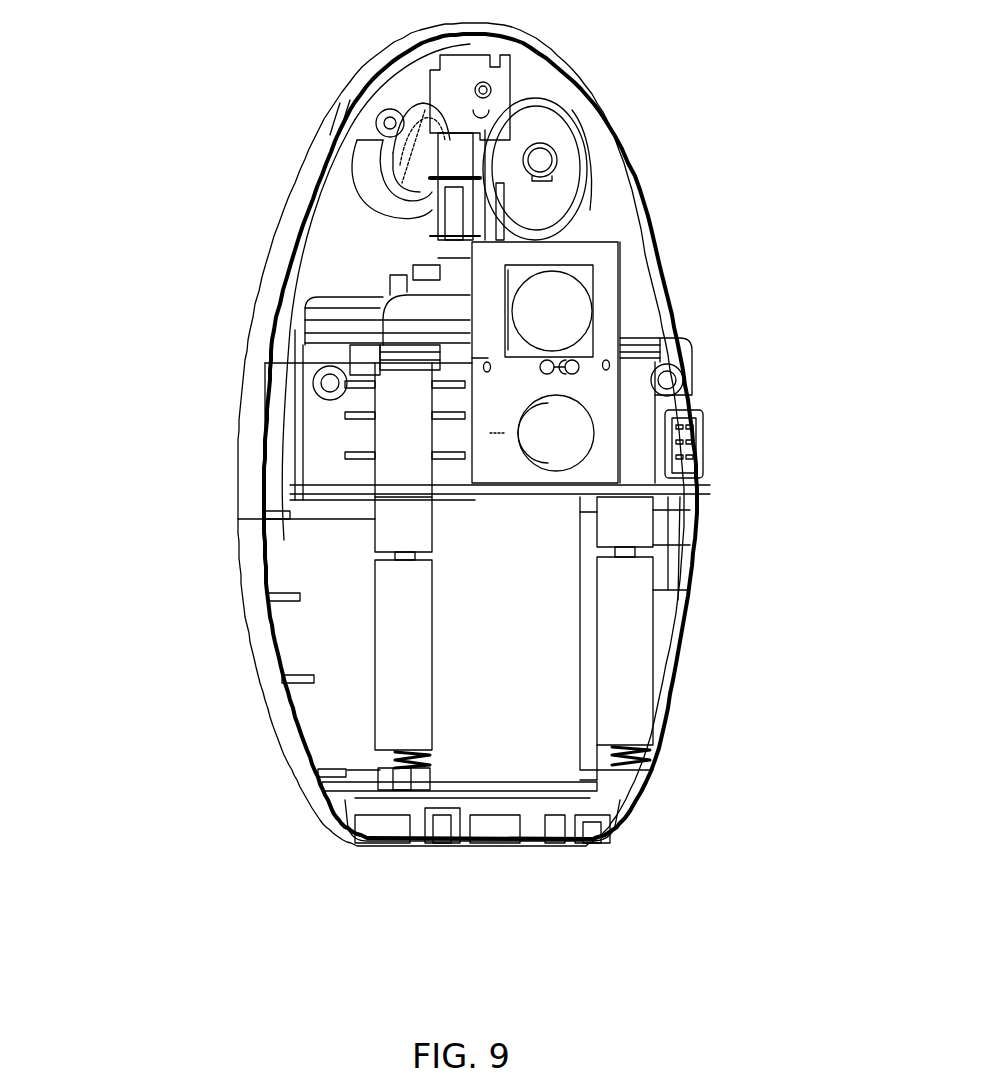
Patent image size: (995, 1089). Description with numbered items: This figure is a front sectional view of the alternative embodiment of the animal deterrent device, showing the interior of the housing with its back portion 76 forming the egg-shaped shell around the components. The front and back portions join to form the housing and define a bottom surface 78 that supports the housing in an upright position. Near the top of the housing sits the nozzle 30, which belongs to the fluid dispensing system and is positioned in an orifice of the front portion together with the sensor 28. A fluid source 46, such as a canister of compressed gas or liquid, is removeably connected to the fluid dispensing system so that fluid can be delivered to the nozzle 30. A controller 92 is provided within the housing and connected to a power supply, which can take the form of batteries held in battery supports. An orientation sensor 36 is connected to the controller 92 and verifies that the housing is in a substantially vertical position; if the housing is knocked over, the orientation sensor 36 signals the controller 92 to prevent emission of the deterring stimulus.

The back portion 76 is at (352, 78).
The bottom surface 78 is at (357, 845).
The nozzle 30 is at (548, 157).
The sensor 28 is at (585, 305).
The orientation sensor 36 is at (582, 433).
The controller 92 is at (290, 363).
The fluid source 46 is at (572, 657).